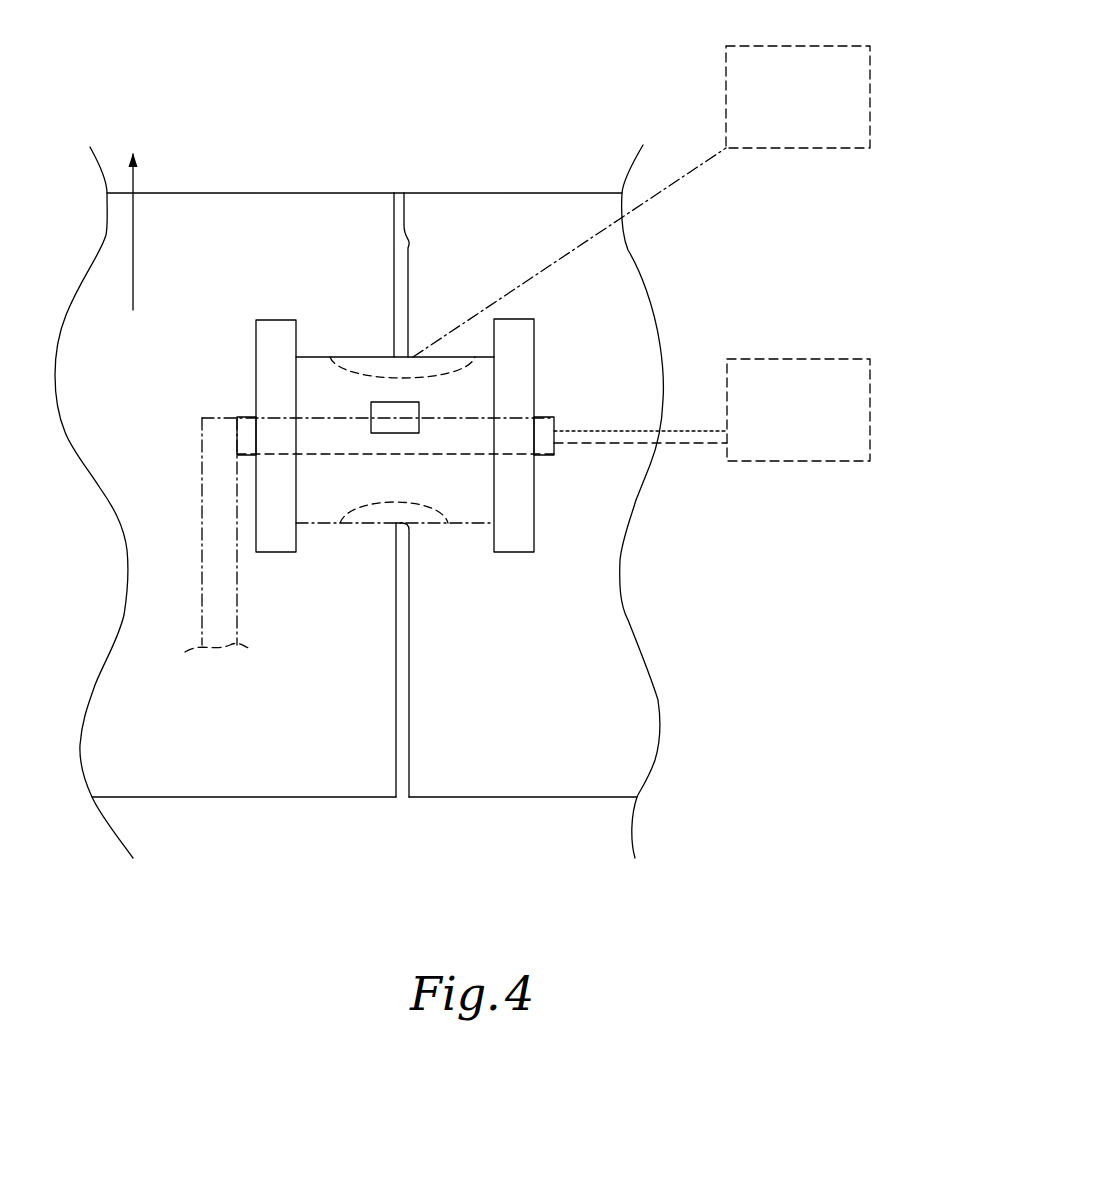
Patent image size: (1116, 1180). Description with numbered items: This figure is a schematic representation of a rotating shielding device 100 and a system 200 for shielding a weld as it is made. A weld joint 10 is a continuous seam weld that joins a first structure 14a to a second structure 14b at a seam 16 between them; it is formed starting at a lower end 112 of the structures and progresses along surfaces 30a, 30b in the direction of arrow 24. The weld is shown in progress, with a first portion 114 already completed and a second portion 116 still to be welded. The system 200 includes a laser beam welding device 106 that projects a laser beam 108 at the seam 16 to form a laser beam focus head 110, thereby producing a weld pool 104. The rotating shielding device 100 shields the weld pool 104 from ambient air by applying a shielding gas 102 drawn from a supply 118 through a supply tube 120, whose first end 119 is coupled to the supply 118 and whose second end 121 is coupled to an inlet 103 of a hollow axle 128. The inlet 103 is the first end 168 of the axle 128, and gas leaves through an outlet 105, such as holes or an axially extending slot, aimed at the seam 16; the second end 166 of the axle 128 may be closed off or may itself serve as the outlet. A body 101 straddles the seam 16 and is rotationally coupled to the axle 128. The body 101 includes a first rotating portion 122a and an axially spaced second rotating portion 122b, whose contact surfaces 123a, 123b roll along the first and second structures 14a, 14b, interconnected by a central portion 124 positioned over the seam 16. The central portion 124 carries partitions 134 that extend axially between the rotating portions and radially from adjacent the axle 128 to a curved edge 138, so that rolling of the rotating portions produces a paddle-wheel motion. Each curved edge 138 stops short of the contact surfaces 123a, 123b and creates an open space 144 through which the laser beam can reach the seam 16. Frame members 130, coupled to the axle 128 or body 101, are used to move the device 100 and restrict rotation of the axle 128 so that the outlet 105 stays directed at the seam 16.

The weld joint 10 is at (366, 763).
The first structure 14a is at (118, 453).
The second structure 14b is at (642, 740).
The seam 16 is at (392, 210).
The arrow 24 is at (133, 262).
The surface of first structure 30a is at (272, 756).
The surface of second structure 30b is at (552, 756).
The rotating shielding device 100 is at (600, 264).
The body 101 is at (568, 217).
The shielding gas 102 is at (683, 433).
The inlet 103 is at (555, 448).
The weld pool 104 is at (415, 340).
The outlet 105 is at (420, 408).
The laser beam welding device 106 is at (825, 150).
The laser beam 108 is at (694, 170).
The laser beam focus head 110 is at (458, 313).
The lower end 112 is at (190, 797).
The first portion of weld joint 114 is at (410, 690).
The second portion of weld joint 116 is at (410, 243).
The supply of shielding gas 118 is at (833, 359).
The first end of supply tube 119 is at (717, 447).
The supply tube 120 is at (690, 445).
The second end of supply tube 121 is at (555, 427).
The first rotating portion 122a is at (255, 345).
The second rotating portion 122b is at (523, 319).
The first contact surface 123a is at (290, 553).
The second contact surface 123b is at (520, 553).
The central portion 124 is at (343, 340).
The axle 128 is at (553, 456).
The frame members 130 is at (203, 612).
The partition 134 is at (300, 360).
The curved edge 138 is at (370, 508).
The open space 144 is at (435, 370).
The second end of axle 166 is at (553, 417).
The first end of axle 168 is at (237, 420).
The system 200 is at (191, 49).